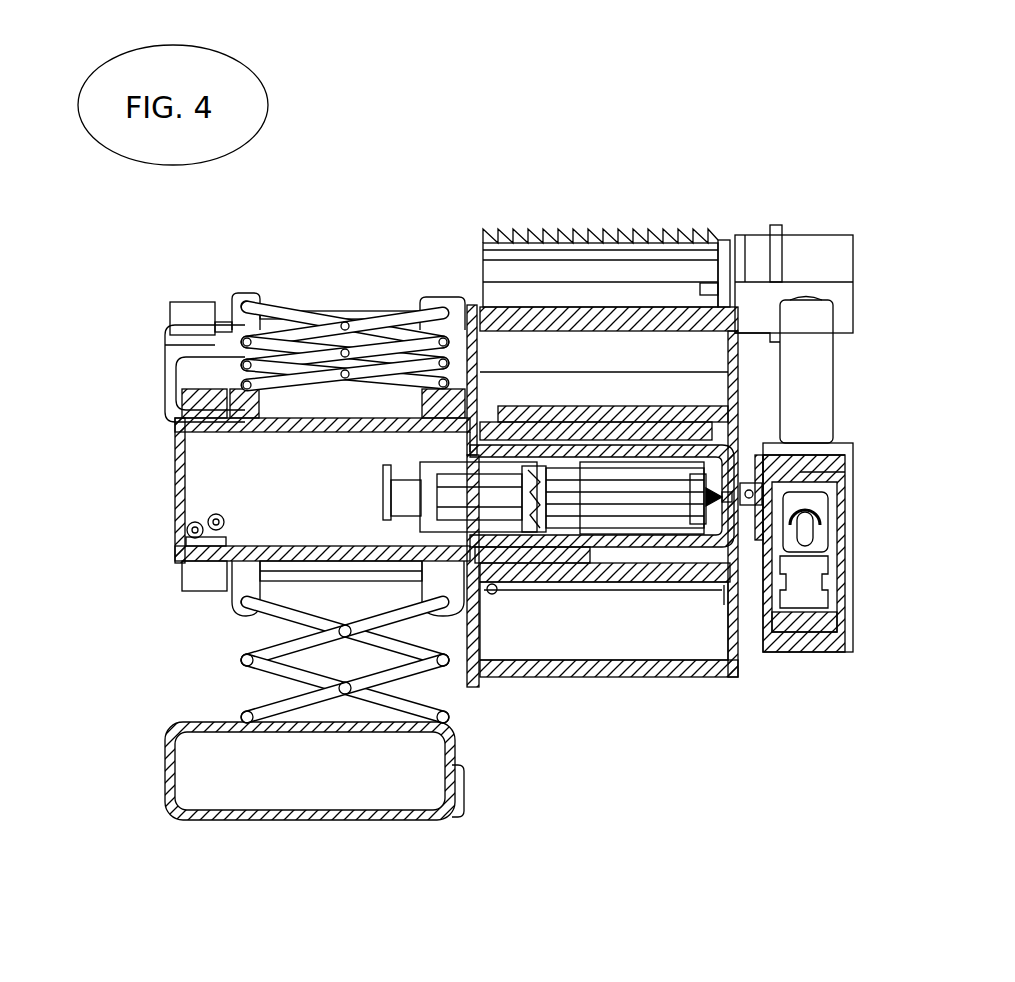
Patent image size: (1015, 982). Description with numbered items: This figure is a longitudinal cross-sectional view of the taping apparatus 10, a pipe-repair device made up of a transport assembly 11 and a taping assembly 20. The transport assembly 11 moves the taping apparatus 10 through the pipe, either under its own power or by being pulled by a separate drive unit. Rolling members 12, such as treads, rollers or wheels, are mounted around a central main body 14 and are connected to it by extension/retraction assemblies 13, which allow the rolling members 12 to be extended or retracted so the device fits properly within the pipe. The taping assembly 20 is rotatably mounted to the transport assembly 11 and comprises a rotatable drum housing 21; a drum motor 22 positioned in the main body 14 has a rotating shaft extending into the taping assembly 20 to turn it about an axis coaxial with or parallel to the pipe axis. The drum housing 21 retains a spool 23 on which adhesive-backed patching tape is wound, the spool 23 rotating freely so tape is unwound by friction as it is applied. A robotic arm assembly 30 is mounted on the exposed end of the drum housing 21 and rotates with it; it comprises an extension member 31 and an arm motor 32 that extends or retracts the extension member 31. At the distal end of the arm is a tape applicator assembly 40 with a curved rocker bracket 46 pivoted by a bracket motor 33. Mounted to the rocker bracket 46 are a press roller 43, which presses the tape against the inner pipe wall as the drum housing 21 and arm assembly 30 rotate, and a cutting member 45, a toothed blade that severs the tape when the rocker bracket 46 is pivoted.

The taping apparatus 10 is at (948, 146).
The transport assembly 11 is at (333, 872).
The rolling members 12 is at (170, 372).
The extension/retraction assemblies 13 is at (360, 322).
The main body 14 is at (175, 500).
The taping assembly 20 is at (736, 742).
The drum housing 21 is at (740, 678).
The drum motor 22 is at (392, 494).
The spool 23 is at (625, 583).
The robotic arm assembly 30 is at (893, 668).
The extension member 31 is at (826, 392).
The arm motor 32 is at (853, 548).
The bracket motor 33 is at (850, 270).
The tape applicator assembly 40 is at (447, 220).
The press roller 43 is at (585, 280).
The cutting member 45 is at (690, 235).
The rocker bracket 46 is at (726, 238).